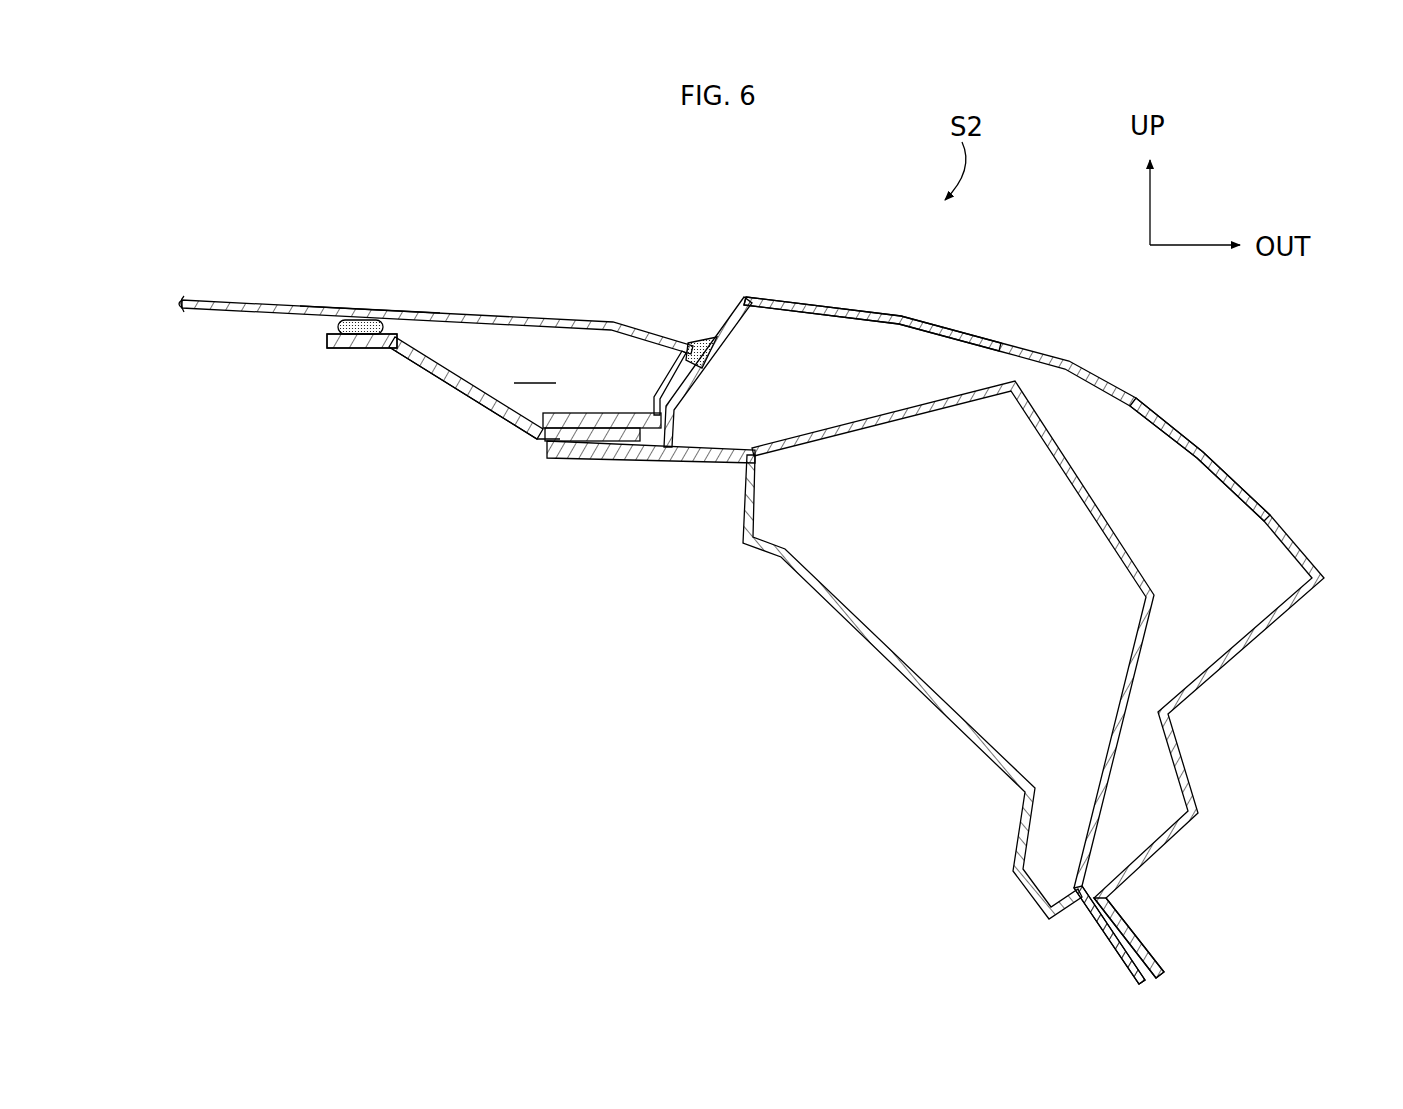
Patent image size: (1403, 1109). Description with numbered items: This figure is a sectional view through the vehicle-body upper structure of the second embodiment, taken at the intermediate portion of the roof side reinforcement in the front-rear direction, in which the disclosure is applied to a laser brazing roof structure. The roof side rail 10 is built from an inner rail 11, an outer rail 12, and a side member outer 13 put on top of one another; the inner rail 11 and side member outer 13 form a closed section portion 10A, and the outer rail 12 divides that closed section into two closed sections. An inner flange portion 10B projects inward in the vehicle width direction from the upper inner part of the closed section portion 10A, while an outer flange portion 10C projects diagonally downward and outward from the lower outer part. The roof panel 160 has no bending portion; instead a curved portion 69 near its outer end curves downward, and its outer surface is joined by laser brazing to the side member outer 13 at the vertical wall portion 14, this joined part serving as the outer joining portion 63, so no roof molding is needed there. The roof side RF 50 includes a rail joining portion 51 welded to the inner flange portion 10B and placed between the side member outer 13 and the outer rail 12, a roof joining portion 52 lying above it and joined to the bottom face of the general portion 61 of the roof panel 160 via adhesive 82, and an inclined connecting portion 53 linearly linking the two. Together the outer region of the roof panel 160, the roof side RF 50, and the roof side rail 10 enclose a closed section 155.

The roof side rail 10 is at (1052, 347).
The closed section portion 10A is at (890, 312).
The inner flange portion 10B is at (610, 463).
The outer flange portion 10C is at (1152, 948).
The inner rail 11 is at (940, 725).
The outer rail 12 is at (1082, 522).
The side member outer 13 is at (1176, 430).
The vertical wall portion 14 is at (718, 360).
The roof side RF 50 is at (470, 408).
The rail joining portion 51 is at (568, 430).
The roof joining portion 52 is at (355, 348).
The connecting portion 53 is at (440, 377).
The general portion 61 is at (212, 302).
The outer joining portion 63 is at (705, 338).
The curved portion 69 is at (668, 376).
The adhesive 82 is at (368, 320).
The closed section 155 is at (539, 369).
The roof panel 160 is at (294, 302).